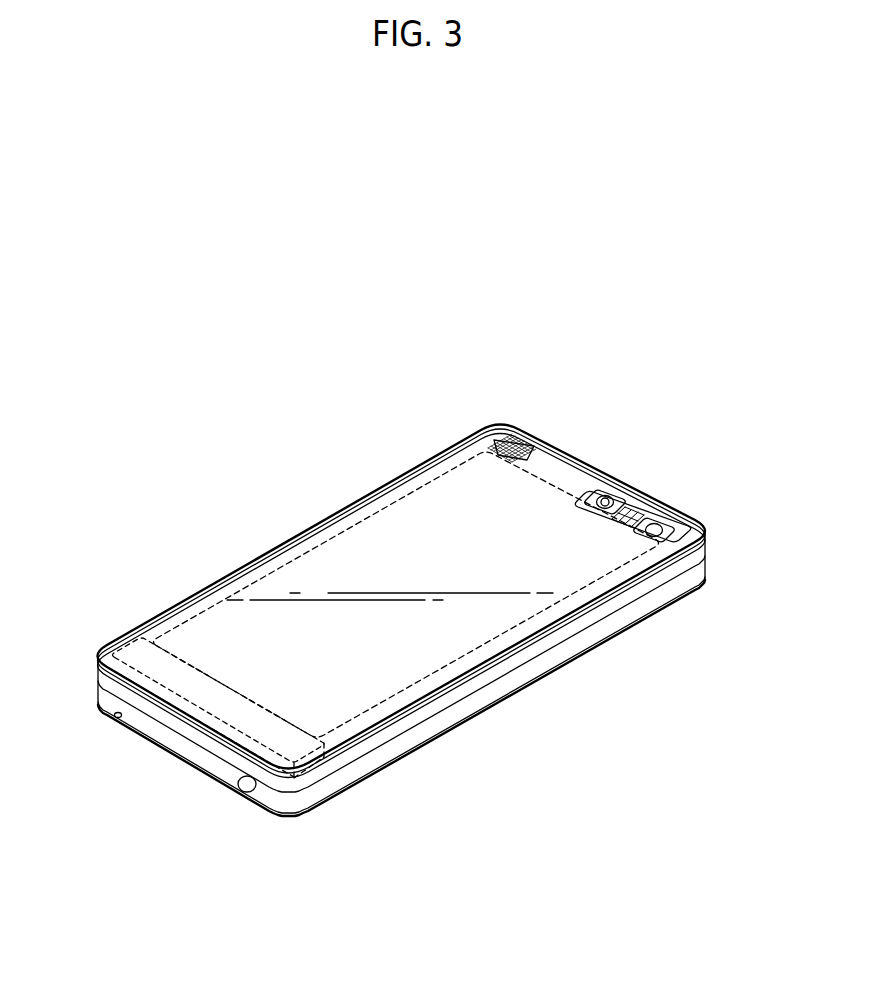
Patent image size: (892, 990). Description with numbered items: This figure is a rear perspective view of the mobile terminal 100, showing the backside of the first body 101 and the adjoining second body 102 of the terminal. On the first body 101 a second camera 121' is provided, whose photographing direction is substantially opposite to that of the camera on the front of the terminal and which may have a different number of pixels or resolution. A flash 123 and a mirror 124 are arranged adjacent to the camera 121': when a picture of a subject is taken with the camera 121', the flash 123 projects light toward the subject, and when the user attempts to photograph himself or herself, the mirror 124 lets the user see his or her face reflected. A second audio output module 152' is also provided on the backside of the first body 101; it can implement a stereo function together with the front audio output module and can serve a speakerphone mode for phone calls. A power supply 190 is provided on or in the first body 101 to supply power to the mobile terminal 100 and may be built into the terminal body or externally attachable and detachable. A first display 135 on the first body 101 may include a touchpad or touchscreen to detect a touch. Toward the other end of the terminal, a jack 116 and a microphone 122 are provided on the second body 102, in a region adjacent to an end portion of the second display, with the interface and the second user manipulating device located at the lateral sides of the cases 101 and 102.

The mobile terminal 100 is at (366, 472).
The first body 101 is at (698, 557).
The second body 102 is at (698, 583).
The jack 116 is at (240, 790).
The camera 121' is at (626, 469).
The microphone 122 is at (113, 717).
The flash 123 is at (627, 514).
The mirror 124 is at (655, 530).
The first display 135 is at (330, 543).
The audio output module 152' is at (542, 420).
The power supply 190 is at (133, 646).